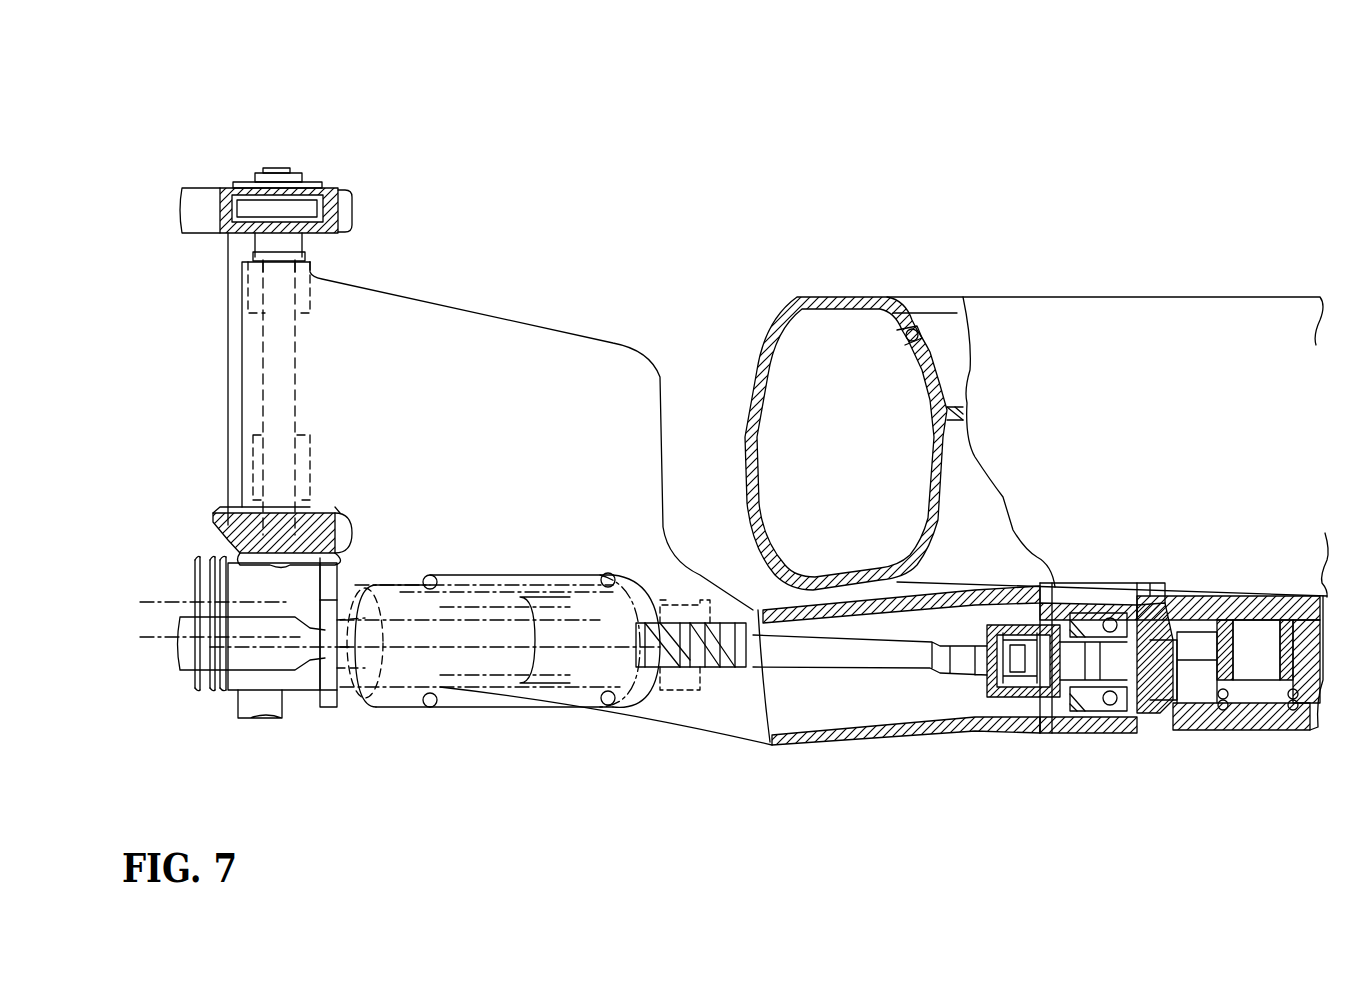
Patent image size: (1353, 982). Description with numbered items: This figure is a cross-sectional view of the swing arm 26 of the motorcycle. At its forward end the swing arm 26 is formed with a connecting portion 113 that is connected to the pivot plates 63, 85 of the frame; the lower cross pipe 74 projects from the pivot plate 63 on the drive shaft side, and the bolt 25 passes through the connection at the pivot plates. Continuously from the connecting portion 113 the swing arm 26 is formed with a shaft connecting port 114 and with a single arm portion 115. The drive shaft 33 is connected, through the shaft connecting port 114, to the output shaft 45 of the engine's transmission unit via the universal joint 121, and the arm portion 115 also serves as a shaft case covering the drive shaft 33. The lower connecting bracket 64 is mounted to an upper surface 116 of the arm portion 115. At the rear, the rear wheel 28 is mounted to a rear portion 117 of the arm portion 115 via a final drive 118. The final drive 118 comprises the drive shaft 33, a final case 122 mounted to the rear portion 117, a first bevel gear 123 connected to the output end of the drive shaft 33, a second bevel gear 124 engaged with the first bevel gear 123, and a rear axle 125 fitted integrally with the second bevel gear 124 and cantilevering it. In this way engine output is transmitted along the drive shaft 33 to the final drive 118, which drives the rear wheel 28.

The pivot plate 85 is at (345, 187).
The swing arm 26 is at (423, 264).
The rear wheel 28 is at (812, 297).
The connecting portion 113 is at (242, 375).
The bolt 25 is at (263, 403).
The lower cross pipe 74 is at (230, 458).
The pivot plate 63 is at (223, 540).
The output shaft 45 is at (150, 637).
The shaft connecting port 114 is at (348, 688).
The universal joint 121 is at (393, 677).
The upper surface 116 is at (573, 684).
The lower connecting bracket 64 is at (633, 690).
The arm portion 115 is at (747, 744).
The drive shaft 33 is at (880, 670).
The rear portion 117 is at (1013, 735).
The final case 122 is at (1073, 733).
The final drive 118 is at (1137, 752).
The first bevel gear 123 is at (1163, 728).
The rear axle 125 is at (1260, 734).
The second bevel gear 124 is at (1152, 602).